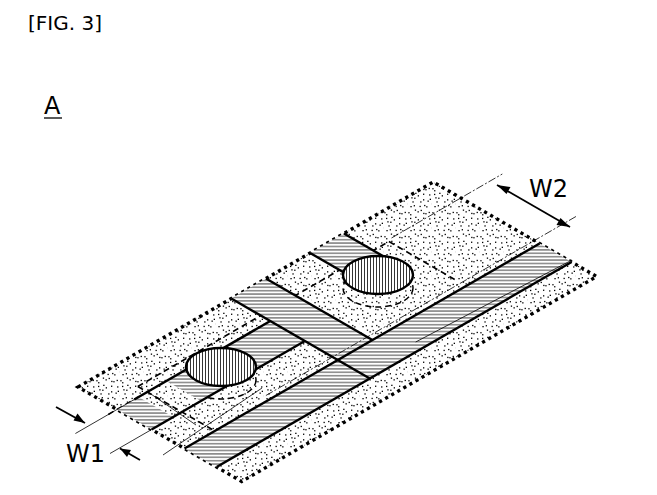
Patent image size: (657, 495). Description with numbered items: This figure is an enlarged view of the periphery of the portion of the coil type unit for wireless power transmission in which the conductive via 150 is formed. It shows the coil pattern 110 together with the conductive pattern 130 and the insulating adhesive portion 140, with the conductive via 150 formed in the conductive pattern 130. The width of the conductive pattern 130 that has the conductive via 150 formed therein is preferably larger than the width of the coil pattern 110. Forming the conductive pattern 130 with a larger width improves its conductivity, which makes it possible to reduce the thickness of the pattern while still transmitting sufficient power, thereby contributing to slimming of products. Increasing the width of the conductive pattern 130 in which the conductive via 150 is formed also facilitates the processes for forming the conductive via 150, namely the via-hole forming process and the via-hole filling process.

The coil pattern 110 is at (172, 390).
The conductive pattern 130 is at (455, 266).
The insulating adhesive portion 140 is at (412, 206).
The conductive via 150 is at (244, 374).